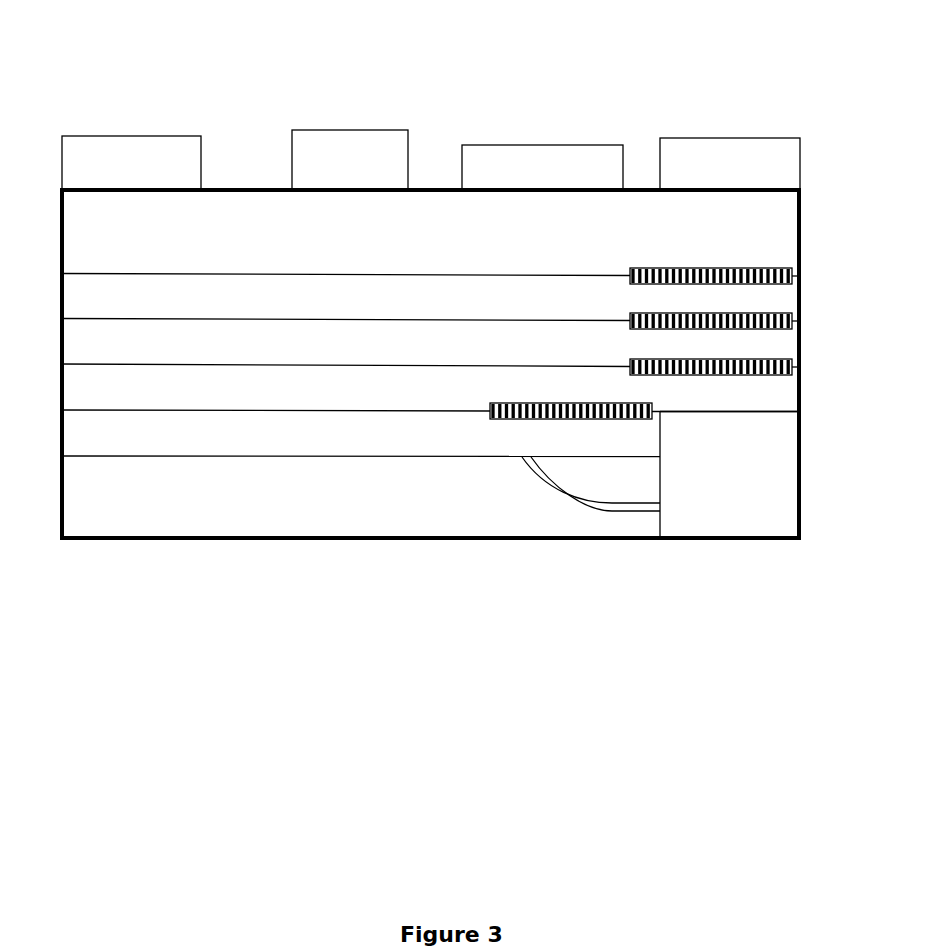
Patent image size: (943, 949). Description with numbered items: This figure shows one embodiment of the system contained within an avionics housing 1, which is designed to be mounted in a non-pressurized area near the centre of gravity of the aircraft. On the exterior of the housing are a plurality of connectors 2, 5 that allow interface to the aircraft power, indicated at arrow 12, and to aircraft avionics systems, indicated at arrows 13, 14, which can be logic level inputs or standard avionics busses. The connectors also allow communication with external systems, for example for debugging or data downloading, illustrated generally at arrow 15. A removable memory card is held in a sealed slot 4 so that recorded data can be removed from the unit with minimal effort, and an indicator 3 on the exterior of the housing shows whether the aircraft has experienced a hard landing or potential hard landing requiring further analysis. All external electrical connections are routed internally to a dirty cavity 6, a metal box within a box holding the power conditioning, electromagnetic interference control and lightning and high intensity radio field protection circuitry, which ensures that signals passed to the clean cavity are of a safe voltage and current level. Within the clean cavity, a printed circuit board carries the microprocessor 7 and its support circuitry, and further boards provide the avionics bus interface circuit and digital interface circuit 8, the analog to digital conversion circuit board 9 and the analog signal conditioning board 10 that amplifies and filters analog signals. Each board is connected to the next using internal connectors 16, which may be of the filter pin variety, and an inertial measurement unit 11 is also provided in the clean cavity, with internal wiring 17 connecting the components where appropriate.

The avionics housing 1 is at (145, 549).
The connector 2 is at (131, 163).
The indicator 3 is at (350, 160).
The sealed slot 4 is at (542, 167).
The connector 5 is at (730, 164).
The dirty cavity 6 is at (430, 247).
The microprocessor 7 is at (430, 303).
The avionics bus interface circuit and digital interface circuit 8 is at (430, 350).
The analog to digital conversion circuit board 9 is at (430, 393).
The analog signal conditioning board 10 is at (361, 438).
The inertial measurement unit 11 is at (729, 475).
The aircraft power 12 is at (85, 120).
The aircraft avionics systems 13 is at (208, 70).
The aircraft avionics systems 14 is at (307, 90).
The communication with external systems 15 is at (732, 55).
The internal connectors 16 is at (675, 401).
The internal wiring 17 is at (602, 526).